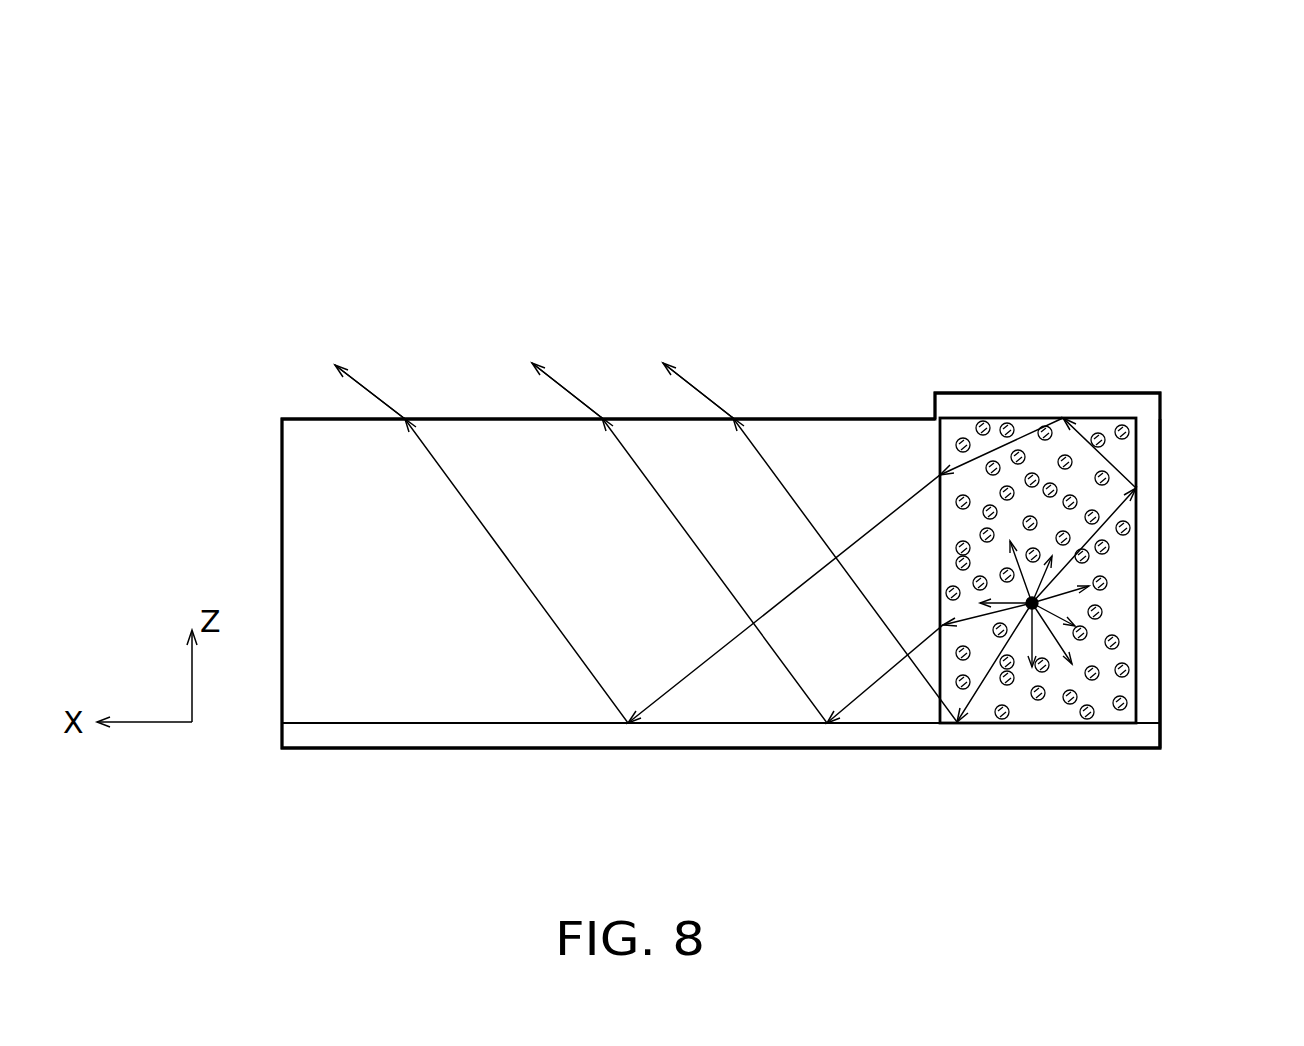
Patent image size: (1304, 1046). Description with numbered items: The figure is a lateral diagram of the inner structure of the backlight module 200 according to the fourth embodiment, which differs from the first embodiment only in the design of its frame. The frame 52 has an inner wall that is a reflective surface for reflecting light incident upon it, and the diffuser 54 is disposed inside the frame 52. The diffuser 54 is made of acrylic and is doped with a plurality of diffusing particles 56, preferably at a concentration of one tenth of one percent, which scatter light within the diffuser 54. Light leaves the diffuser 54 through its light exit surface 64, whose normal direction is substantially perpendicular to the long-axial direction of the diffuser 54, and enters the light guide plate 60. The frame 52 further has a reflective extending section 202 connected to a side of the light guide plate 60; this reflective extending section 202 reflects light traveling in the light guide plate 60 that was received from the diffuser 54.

The backlight module 200 is at (1092, 133).
The reflective extending section 202 is at (815, 740).
The frame 52 is at (1152, 443).
The diffuser 54 is at (1097, 427).
The diffusing particles 56 is at (1128, 520).
The light guide plate 60 is at (462, 435).
The light exit surface 64 is at (937, 447).